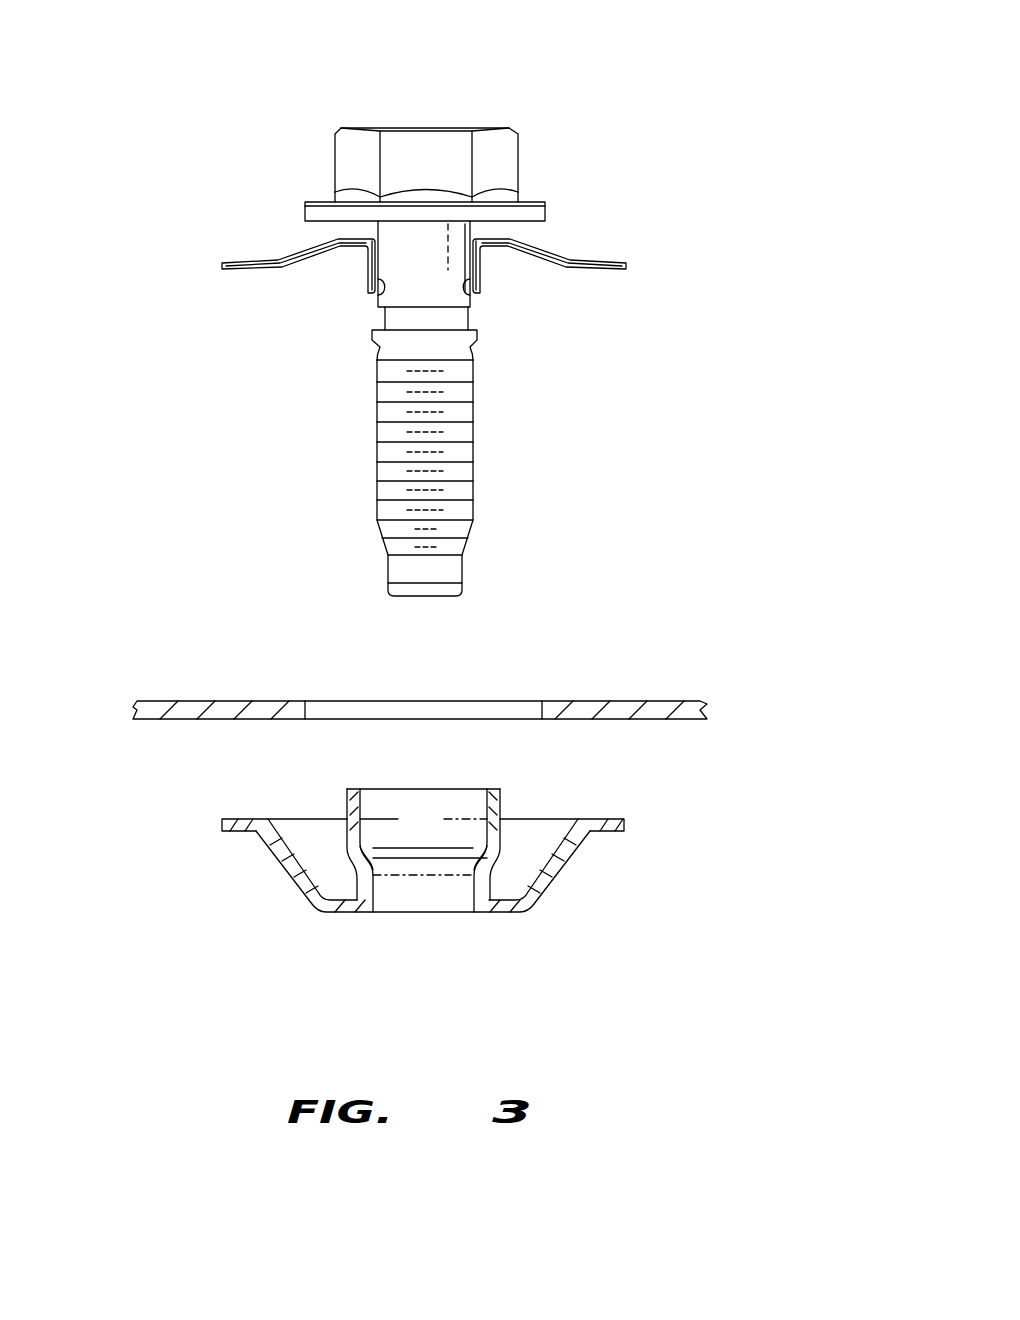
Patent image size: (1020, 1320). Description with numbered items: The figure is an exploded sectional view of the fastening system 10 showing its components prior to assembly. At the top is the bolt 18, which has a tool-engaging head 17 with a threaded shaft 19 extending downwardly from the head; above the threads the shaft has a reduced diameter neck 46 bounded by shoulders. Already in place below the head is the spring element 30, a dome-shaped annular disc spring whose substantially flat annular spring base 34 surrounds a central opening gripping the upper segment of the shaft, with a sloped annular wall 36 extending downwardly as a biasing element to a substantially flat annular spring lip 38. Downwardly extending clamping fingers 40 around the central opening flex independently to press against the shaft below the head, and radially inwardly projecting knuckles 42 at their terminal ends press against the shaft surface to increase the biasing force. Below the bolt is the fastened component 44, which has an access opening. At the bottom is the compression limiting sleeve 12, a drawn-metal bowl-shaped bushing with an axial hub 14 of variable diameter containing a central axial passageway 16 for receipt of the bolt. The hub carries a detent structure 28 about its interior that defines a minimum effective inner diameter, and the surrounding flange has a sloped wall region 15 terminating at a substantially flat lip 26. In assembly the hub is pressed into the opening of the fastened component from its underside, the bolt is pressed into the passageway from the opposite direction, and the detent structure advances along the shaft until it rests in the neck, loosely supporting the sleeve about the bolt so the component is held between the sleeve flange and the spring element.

The fastening system 10 is at (636, 127).
The compression limiting sleeve 12 is at (574, 870).
The axial hub 14 is at (347, 840).
The conical wall of nut 15 is at (318, 900).
The central axial passageway 16 is at (405, 829).
The tool-engaging head 17 is at (460, 127).
The bolt 18 is at (482, 490).
The threaded shaft 19 is at (375, 468).
The lip 26 is at (612, 834).
The detent structure 28 is at (380, 872).
The spring element 30 is at (536, 262).
The annular spring base 34 is at (506, 240).
The sloped annular wall 36 is at (291, 251).
The annular spring lip 38 is at (601, 262).
The clamping fingers 40 is at (363, 275).
The knuckles 42 is at (376, 300).
The fastened component 44 is at (627, 701).
The reduced diameter neck 46 is at (417, 320).